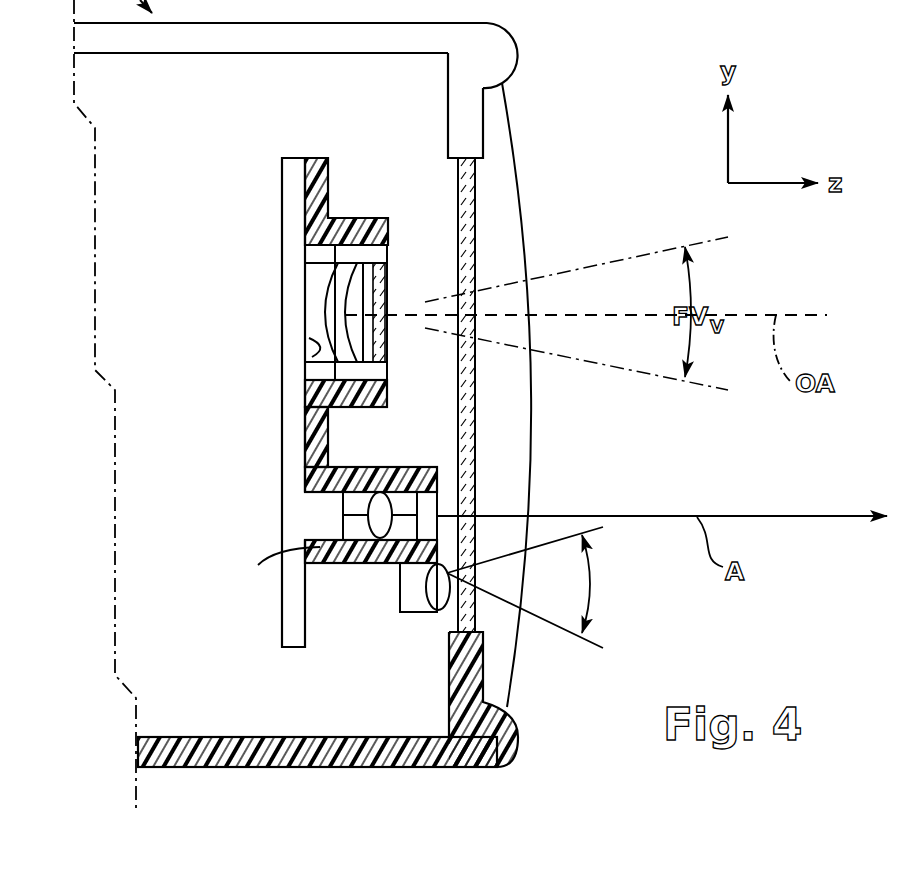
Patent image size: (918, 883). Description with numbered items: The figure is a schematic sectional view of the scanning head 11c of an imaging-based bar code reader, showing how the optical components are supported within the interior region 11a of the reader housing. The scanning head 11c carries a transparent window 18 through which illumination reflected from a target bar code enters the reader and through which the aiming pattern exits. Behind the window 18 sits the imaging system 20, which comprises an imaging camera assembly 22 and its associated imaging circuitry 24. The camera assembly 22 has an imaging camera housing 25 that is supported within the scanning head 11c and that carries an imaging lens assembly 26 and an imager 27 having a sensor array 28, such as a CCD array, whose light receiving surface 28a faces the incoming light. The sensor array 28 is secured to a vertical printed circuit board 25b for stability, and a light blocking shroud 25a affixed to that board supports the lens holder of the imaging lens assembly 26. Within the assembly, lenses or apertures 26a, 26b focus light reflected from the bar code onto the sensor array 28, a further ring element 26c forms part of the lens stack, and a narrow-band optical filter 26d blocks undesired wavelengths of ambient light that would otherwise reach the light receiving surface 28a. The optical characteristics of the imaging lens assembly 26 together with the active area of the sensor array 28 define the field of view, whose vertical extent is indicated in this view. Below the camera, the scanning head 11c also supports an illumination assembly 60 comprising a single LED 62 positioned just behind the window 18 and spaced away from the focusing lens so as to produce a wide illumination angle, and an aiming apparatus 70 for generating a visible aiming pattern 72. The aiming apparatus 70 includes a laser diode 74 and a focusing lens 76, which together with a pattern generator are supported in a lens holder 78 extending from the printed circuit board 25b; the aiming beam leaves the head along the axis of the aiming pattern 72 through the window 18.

The interior region 11a is at (163, 118).
The scanning head 11c is at (247, 777).
The transparent window 18 is at (465, 442).
The imaging system 20 is at (145, 285).
The imaging camera assembly 22 is at (277, 207).
The imaging circuitry 24 is at (369, 268).
The imaging camera housing 25 is at (317, 155).
The light blocking shroud 25a is at (342, 230).
The printed circuit board 25b is at (320, 442).
The imaging lens assembly 26 is at (384, 326).
The lens 26a is at (330, 403).
The lens 26b is at (360, 293).
The upper ring 26c is at (340, 278).
The narrow-band optical filter 26d is at (375, 372).
The imager 27 is at (300, 301).
The sensor array 28 is at (320, 340).
The light receiving surface 28a is at (312, 350).
The illumination assembly 60 is at (482, 608).
The LED 62 is at (415, 587).
The aiming apparatus 70 is at (350, 533).
The aiming pattern 72 is at (788, 517).
The laser diode 74 is at (318, 515).
The focusing lens 76 is at (380, 520).
The lens holder 78 is at (425, 502).